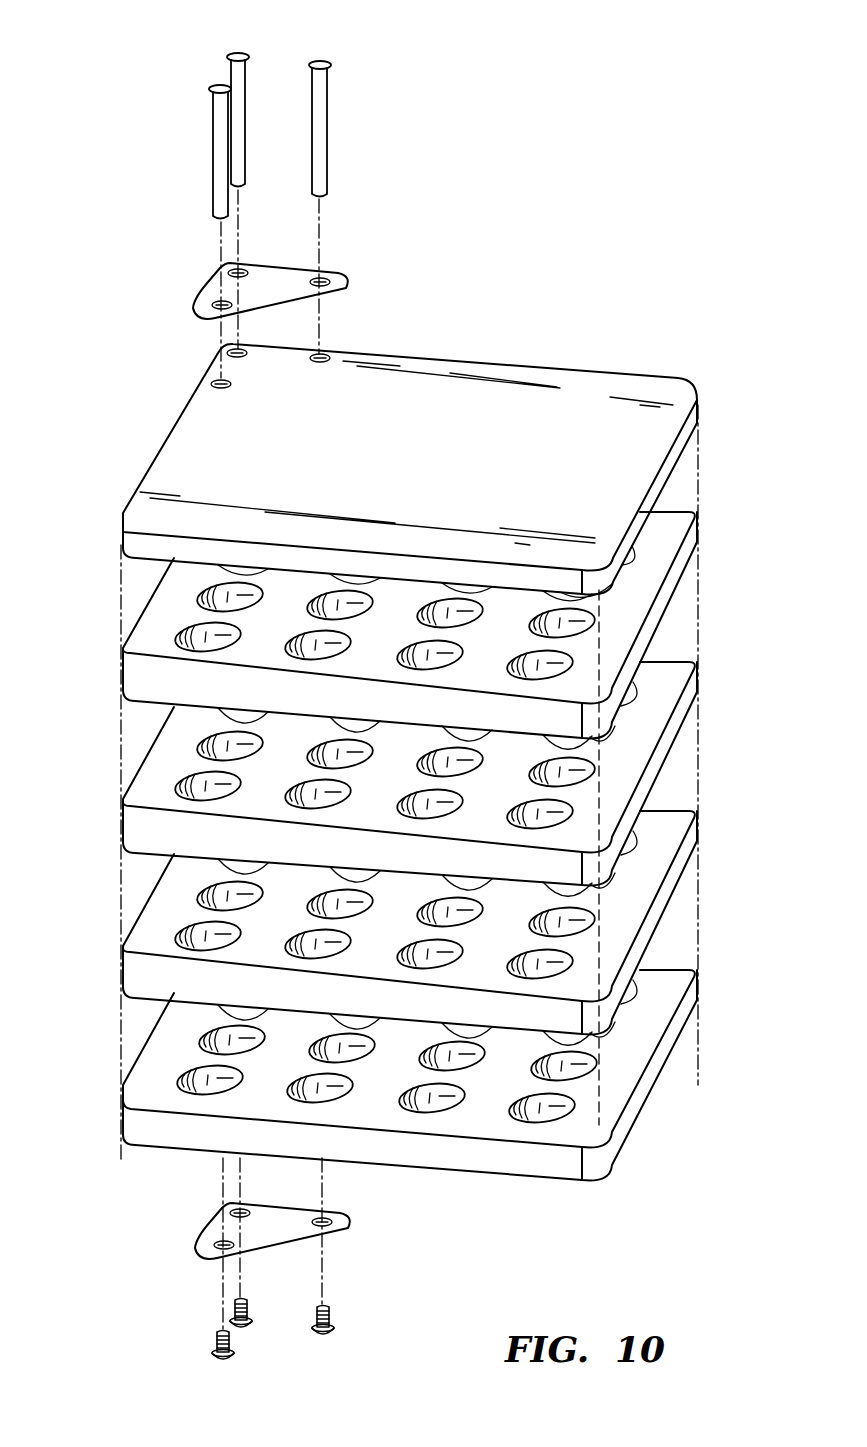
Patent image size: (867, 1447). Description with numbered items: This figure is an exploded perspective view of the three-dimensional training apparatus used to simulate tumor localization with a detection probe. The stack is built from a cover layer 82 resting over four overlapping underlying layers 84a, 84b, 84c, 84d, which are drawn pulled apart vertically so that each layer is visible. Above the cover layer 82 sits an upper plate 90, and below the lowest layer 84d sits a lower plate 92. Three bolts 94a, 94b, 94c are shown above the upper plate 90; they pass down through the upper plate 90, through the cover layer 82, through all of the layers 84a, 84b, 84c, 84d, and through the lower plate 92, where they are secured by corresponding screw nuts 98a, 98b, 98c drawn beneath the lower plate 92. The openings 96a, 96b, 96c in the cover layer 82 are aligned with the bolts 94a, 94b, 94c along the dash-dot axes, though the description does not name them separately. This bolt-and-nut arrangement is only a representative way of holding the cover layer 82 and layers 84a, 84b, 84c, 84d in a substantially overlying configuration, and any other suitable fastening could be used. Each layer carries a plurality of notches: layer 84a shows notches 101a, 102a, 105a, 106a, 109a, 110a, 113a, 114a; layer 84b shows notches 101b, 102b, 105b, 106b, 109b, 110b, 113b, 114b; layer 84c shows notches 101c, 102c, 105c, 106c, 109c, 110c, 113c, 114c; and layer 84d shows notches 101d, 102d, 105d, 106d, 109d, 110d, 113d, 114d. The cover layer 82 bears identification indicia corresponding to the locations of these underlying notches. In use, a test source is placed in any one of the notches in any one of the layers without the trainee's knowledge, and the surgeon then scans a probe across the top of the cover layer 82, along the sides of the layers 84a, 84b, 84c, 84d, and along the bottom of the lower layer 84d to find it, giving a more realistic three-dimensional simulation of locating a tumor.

The cover layer 82 is at (122, 533).
The underlying layer 84a is at (123, 650).
The underlying layer 84b is at (123, 799).
The underlying layer 84c is at (123, 949).
The underlying layer 84d is at (123, 1087).
The upper plate 90 is at (340, 278).
The lower plate 92 is at (350, 1221).
The bolt 94a is at (216, 104).
The bolt 94b is at (240, 57).
The bolt 94c is at (325, 85).
The pin hole in cover plate 96a is at (211, 383).
The pin hole in cover plate 96b is at (228, 352).
The pin hole in cover plate 96c is at (332, 352).
The screw nut 98a is at (216, 1346).
The screw nut 98b is at (236, 1304).
The screw nut 98c is at (332, 1317).
The notch 101a is at (560, 664).
The notch 101b is at (560, 813).
The notch 101c is at (560, 963).
The notch 101d is at (562, 1107).
The notch 102a is at (580, 614).
The notch 102b is at (580, 763).
The notch 102c is at (580, 913).
The notch 102d is at (582, 1057).
The notch 105a is at (460, 649).
The notch 105b is at (460, 798).
The notch 105c is at (460, 948).
The notch 105d is at (485, 1108).
The notch 106a is at (476, 604).
The notch 106b is at (476, 753).
The notch 106c is at (476, 903).
The notch 106d is at (478, 1047).
The notch 109a is at (346, 641).
The notch 109b is at (346, 790).
The notch 109c is at (346, 940).
The notch 109d is at (348, 1084).
The notch 110a is at (364, 597).
The notch 110b is at (364, 746).
The notch 110c is at (364, 896).
The notch 110d is at (366, 1040).
The notch 113a is at (236, 638).
The notch 113b is at (236, 787).
The notch 113c is at (236, 937).
The notch 113d is at (238, 1081).
The notch 114a is at (254, 589).
The notch 114b is at (254, 738).
The notch 114c is at (254, 888).
The notch 114d is at (256, 1032).